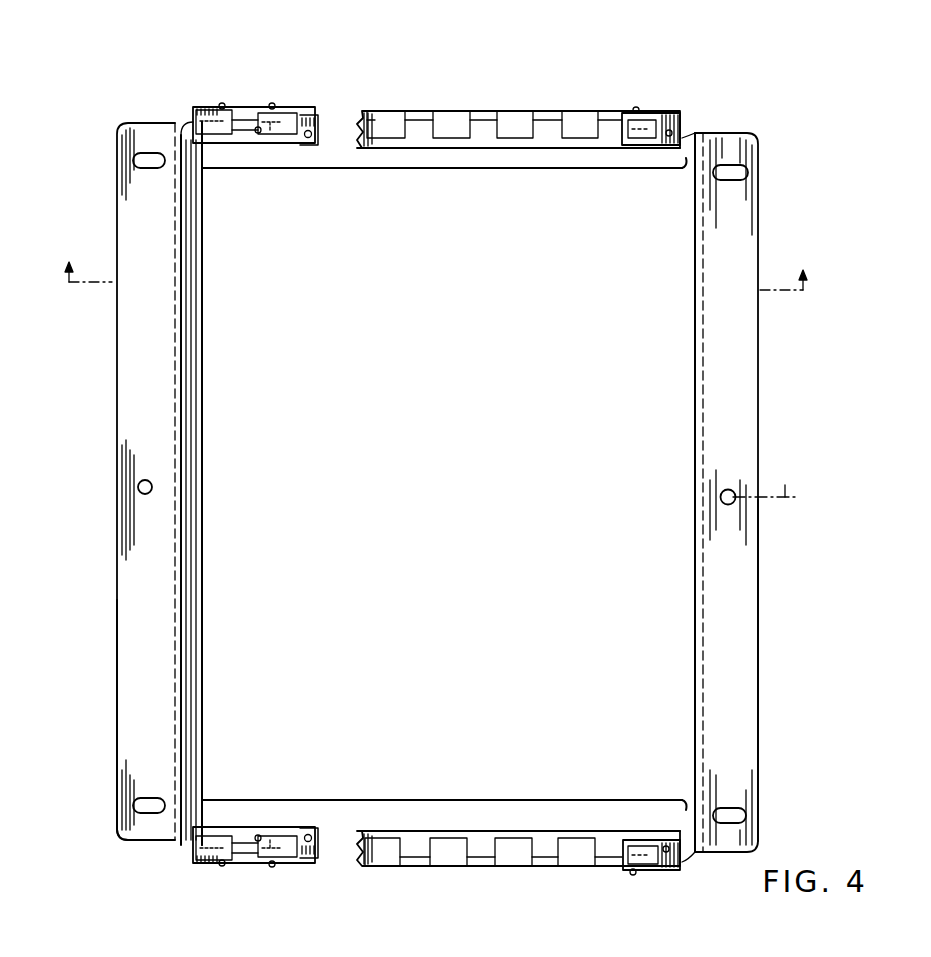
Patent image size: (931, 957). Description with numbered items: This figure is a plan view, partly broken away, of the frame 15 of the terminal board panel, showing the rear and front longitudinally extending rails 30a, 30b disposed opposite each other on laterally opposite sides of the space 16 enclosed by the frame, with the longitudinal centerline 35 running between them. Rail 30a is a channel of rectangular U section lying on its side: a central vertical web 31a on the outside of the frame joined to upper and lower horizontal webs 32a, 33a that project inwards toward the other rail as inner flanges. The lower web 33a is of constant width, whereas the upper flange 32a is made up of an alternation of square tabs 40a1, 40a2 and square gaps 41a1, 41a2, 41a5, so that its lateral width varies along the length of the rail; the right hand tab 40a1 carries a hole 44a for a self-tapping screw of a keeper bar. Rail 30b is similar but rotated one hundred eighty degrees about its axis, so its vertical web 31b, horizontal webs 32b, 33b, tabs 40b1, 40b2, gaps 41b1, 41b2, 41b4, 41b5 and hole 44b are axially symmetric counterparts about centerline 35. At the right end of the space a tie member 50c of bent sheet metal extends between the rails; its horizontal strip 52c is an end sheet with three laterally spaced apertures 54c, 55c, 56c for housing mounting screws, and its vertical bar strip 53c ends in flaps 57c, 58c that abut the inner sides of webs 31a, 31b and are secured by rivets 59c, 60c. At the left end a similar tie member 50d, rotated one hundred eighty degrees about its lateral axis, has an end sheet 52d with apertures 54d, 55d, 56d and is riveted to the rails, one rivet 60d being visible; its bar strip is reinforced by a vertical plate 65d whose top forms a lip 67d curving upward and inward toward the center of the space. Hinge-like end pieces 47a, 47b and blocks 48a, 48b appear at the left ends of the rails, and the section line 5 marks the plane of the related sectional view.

The section line 5- 5 is at (436, 264).
The frame 15 is at (423, 57).
The space 16 is at (604, 320).
The rear rail 30a is at (383, 89).
The front rail 30b is at (403, 901).
The central vertical web 31a is at (482, 112).
The central vertical web 31b is at (485, 868).
The upper horizontal web 32a is at (426, 171).
The upper horizontal web 32b is at (432, 800).
The lower horizontal web 33a is at (521, 150).
The lower horizontal web 33b is at (484, 826).
The longitudinal centerline 35 is at (786, 485).
The tab 40a1 is at (637, 108).
The tab 40a2 is at (577, 112).
The tab 40b1 is at (632, 875).
The tab 40b2 is at (575, 868).
The gap 41a1 is at (608, 130).
The gap 41a2 is at (548, 133).
The gap 41a5 is at (362, 110).
The gap 41b1 is at (602, 850).
The gap 41b2 is at (540, 840).
The gap 41b4 is at (414, 840).
The gap 41b5 is at (360, 832).
The hole 44a is at (680, 136).
The hole 44b is at (680, 868).
The upper hinge tab 47a is at (318, 115).
The lower hinge tab 47b is at (318, 866).
The upper left latch block 48a is at (255, 106).
The lower left latch block 48b is at (250, 866).
The tie member 50c is at (775, 367).
The tie member 50d is at (64, 367).
The horizontal strip portion 52c is at (736, 602).
The horizontal strip portion 52d is at (140, 667).
The vertical strip portion 53c is at (698, 655).
The aperture 54c is at (735, 172).
The aperture 54d is at (142, 160).
The aperture 55c is at (724, 497).
The aperture 55d is at (153, 487).
The aperture 56c is at (744, 813).
The aperture 56d is at (142, 806).
The flap 57c is at (622, 140).
The flap 58c is at (620, 846).
The rivet 59c is at (668, 120).
The rivet 60c is at (660, 872).
The rivet 60d is at (214, 862).
The reinforcing plate 65d is at (178, 376).
The lip 67d is at (204, 590).